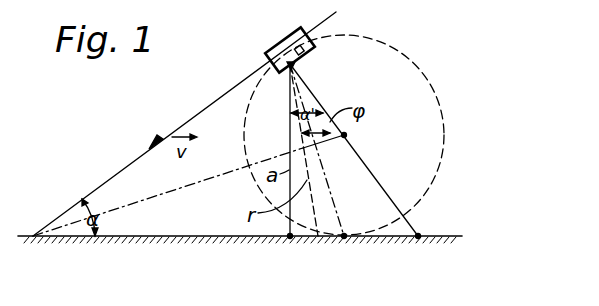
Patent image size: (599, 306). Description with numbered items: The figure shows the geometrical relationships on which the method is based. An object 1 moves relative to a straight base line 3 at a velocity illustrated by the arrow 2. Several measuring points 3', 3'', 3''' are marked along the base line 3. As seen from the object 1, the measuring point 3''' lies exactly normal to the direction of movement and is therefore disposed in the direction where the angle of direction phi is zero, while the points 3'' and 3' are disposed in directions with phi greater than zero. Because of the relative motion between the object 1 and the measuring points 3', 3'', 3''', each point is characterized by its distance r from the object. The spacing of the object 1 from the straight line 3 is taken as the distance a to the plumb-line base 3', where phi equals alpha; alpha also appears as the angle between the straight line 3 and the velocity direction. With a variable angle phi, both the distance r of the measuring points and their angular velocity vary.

The object 1 is at (286, 32).
The arrow 2 is at (163, 138).
The straight base line 3 is at (240, 258).
The measuring point (plumb-line base) 3' is at (282, 173).
The measuring point 3'' is at (323, 173).
The measuring point 3''' is at (363, 173).